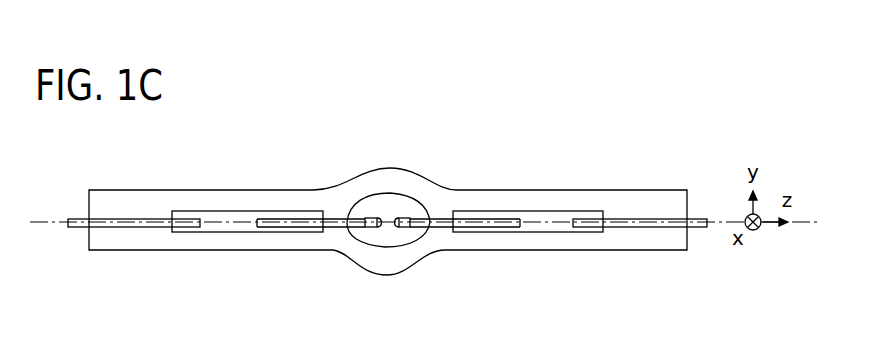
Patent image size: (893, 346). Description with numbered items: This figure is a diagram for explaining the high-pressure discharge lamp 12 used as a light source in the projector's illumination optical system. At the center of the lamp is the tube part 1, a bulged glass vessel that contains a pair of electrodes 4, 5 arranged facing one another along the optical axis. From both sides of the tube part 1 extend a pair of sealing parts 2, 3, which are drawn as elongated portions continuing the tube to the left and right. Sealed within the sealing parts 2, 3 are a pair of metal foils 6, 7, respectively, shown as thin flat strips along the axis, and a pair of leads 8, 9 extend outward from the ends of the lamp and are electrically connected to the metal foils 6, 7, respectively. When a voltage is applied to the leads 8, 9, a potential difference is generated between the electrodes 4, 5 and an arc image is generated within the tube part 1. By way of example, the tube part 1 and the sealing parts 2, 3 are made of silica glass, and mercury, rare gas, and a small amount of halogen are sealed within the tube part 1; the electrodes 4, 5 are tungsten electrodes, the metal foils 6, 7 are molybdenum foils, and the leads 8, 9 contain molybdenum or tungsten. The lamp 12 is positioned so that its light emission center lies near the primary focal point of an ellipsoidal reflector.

The tube part 1 is at (388, 168).
The sealing part 2 is at (262, 190).
The sealing part 3 is at (528, 190).
The electrode 4 is at (372, 228).
The electrode 5 is at (405, 228).
The metal foil 6 is at (220, 211).
The metal foil 7 is at (562, 210).
The lead 8 is at (80, 218).
The lead 9 is at (697, 218).
The high-pressure discharge lamp 12 is at (599, 119).